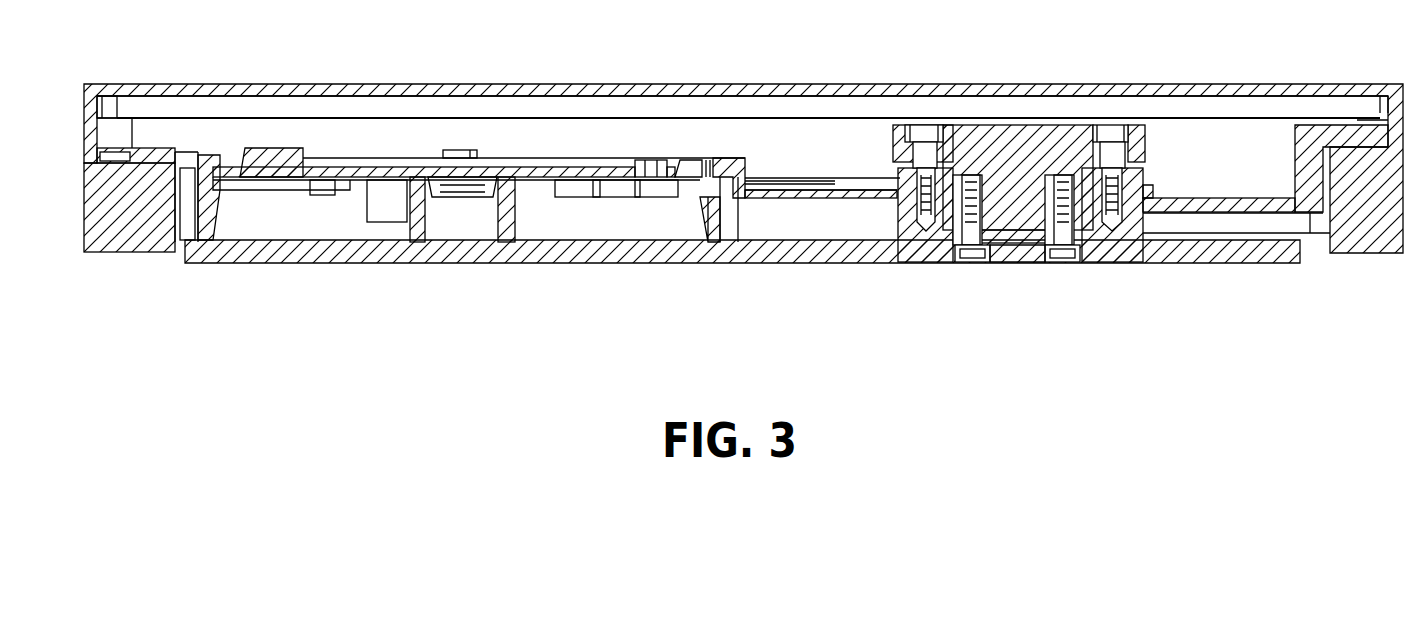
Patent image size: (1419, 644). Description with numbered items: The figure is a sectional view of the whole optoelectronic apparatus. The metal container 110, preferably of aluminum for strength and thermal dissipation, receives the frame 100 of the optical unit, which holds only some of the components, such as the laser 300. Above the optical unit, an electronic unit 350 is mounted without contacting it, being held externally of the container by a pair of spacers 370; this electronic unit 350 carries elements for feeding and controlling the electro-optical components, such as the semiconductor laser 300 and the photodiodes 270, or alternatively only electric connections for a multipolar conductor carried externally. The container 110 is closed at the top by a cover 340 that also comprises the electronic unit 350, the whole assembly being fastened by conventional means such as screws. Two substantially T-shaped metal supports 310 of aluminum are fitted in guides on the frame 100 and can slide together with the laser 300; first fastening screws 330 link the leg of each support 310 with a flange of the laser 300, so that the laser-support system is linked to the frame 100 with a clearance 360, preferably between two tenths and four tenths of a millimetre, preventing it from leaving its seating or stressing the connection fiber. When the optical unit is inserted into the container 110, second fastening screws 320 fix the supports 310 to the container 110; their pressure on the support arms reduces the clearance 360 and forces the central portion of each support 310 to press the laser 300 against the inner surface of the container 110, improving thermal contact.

The frame 100 is at (248, 222).
The container 110 is at (132, 226).
The photodiodes 270 is at (113, 115).
The laser 300 is at (1026, 243).
The T-shaped metal supports 310 is at (1018, 184).
The screws 320 is at (1111, 132).
The screws 330 is at (967, 265).
The cover 340 is at (216, 90).
The electronic unit 350 is at (275, 105).
The clearance 360 is at (893, 167).
The spacers 370 is at (1383, 98).